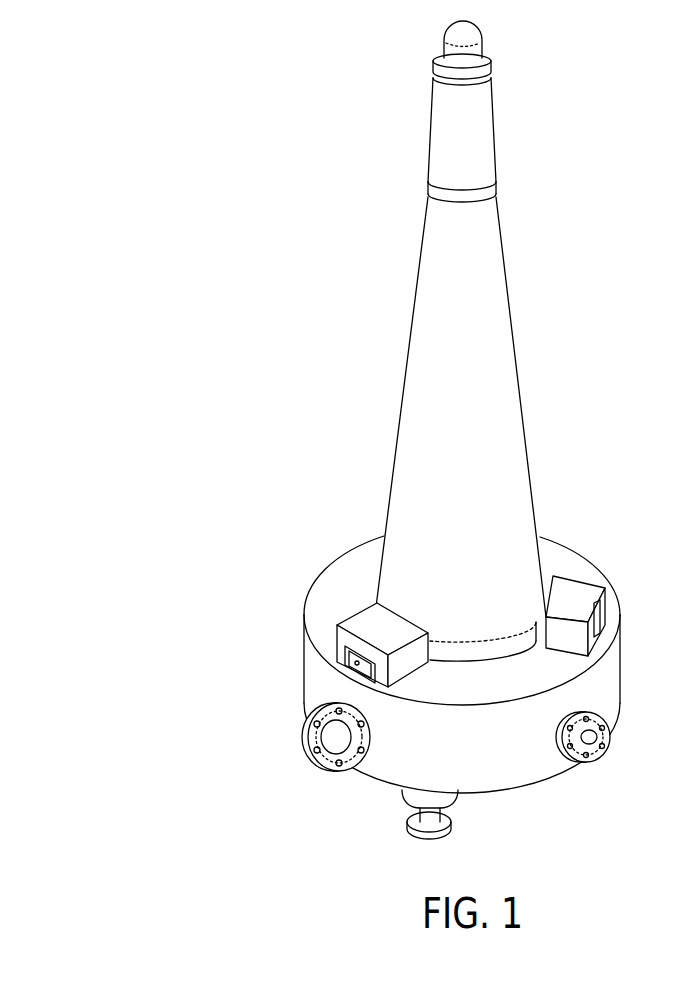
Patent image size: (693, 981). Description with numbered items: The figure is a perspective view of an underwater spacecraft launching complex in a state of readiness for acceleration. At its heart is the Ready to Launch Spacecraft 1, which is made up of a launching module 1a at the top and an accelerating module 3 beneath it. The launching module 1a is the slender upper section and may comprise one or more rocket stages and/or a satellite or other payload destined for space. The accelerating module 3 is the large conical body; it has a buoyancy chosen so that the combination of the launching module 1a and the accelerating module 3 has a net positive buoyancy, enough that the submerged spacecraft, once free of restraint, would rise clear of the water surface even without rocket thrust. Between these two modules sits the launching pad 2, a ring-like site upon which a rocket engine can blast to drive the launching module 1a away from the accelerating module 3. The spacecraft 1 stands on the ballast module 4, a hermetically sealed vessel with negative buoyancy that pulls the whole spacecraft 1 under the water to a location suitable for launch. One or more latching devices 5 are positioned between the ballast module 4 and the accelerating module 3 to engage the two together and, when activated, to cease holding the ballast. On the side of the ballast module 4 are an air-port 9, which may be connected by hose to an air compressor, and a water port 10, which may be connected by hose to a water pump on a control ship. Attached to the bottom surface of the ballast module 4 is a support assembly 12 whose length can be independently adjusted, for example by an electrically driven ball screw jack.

The Ready to Launch Spacecraft 1 is at (492, 98).
The launching module 1a is at (442, 122).
The launching pad 2 is at (497, 172).
The accelerating module 3 is at (522, 380).
The ballast module 4 is at (568, 545).
The latching device 5 is at (582, 580).
The air-port 9 is at (310, 760).
The water port 10 is at (598, 762).
The support assembly 12 is at (460, 830).